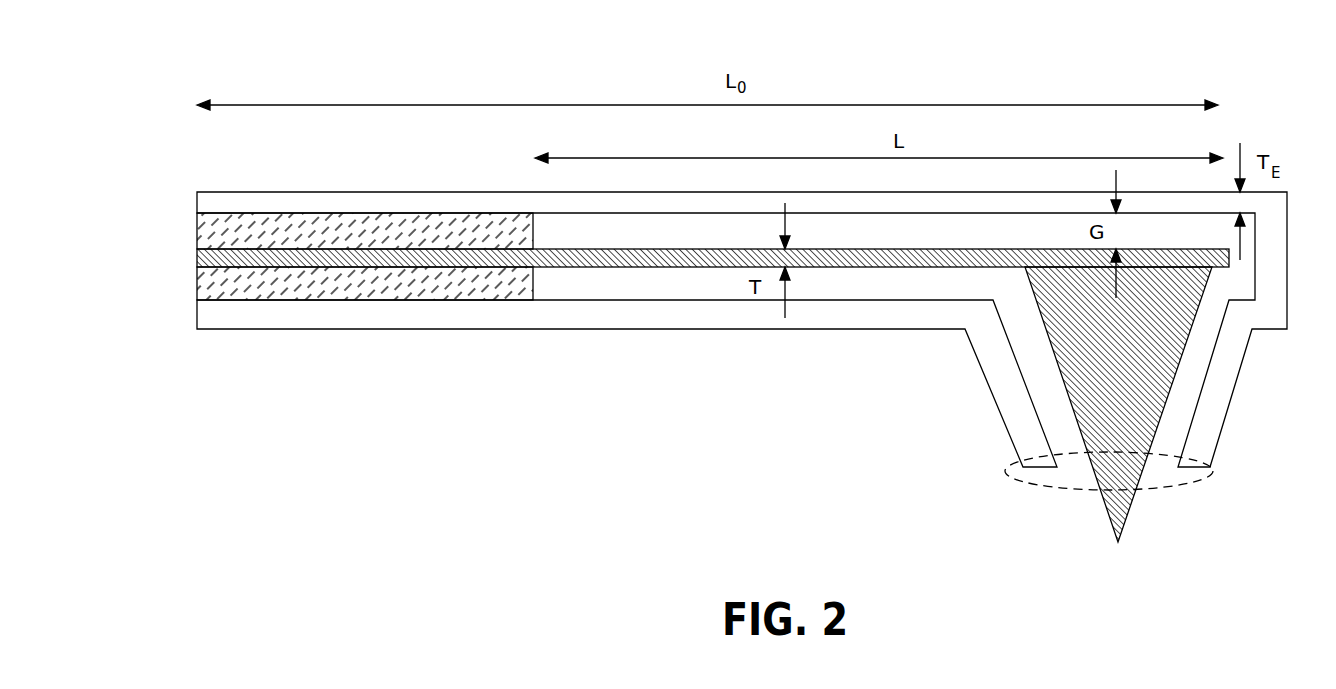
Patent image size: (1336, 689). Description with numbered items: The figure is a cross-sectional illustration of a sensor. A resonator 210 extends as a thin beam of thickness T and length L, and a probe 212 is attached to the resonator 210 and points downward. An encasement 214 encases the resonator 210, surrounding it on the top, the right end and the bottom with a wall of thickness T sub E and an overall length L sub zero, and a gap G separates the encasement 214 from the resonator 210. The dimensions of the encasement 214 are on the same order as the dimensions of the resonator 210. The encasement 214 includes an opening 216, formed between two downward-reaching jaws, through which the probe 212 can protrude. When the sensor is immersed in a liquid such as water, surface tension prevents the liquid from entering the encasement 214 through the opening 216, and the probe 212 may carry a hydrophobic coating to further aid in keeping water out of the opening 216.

The resonator 210 is at (570, 248).
The probe 212 is at (1177, 373).
The encasement 214 is at (197, 313).
The opening 216 is at (1137, 487).